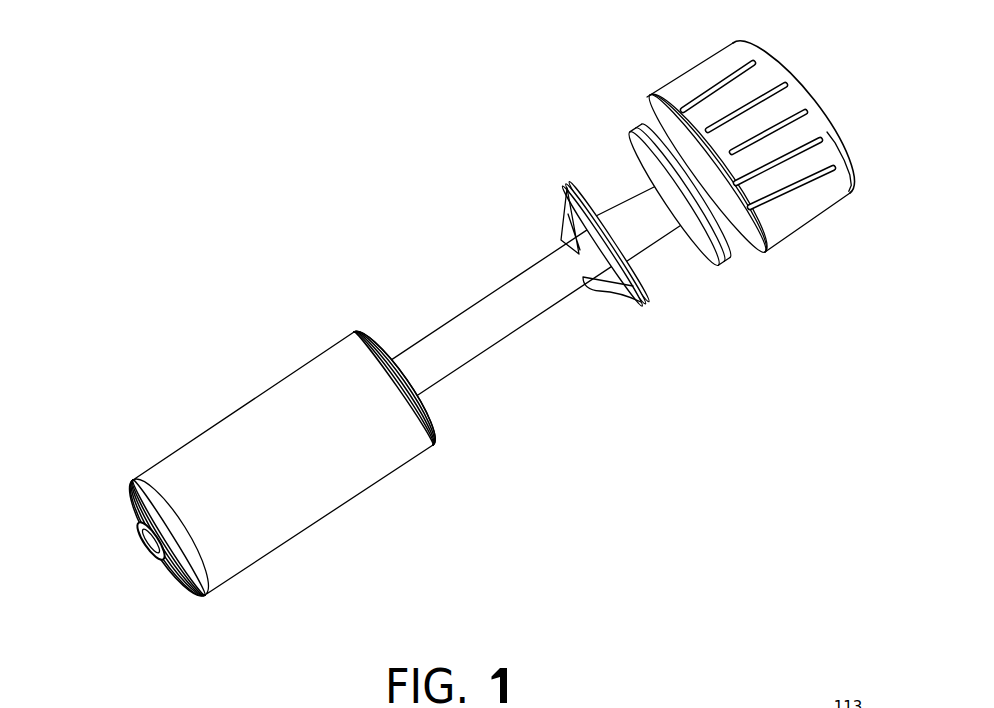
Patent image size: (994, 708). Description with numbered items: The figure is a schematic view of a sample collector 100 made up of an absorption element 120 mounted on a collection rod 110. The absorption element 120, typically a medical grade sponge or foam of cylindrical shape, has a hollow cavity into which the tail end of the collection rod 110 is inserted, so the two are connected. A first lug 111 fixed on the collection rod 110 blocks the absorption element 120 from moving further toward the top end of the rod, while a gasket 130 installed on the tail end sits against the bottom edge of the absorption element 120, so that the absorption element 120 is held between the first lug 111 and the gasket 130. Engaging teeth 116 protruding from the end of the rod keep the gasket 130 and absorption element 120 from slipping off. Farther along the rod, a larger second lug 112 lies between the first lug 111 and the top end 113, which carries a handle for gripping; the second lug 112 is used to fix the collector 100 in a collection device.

The sample collector 100 is at (465, 338).
The collection rod 110 is at (513, 287).
The first lug 111 is at (430, 403).
The second lug 112 is at (573, 180).
The top end 113 is at (757, 147).
The engaging teeth 116 is at (157, 562).
The absorption element 120 is at (346, 428).
The gasket 130 is at (135, 495).